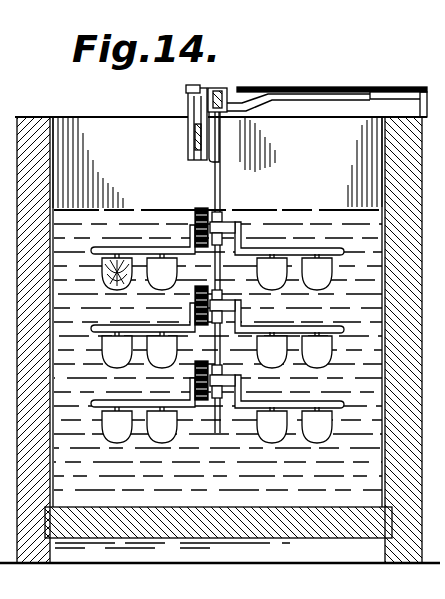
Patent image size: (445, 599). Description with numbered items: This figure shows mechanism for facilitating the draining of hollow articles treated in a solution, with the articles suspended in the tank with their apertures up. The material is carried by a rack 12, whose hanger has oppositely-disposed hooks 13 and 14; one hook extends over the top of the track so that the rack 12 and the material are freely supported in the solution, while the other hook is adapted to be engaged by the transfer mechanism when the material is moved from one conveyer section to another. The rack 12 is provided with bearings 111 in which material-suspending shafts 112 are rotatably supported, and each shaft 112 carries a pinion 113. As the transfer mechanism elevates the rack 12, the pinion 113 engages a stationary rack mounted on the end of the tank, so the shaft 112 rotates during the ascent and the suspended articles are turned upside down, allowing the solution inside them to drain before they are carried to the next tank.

The hook 14 is at (191, 88).
The hook 13 is at (214, 90).
The rack 12 is at (219, 210).
The pinion 113 is at (204, 208).
The bearing 111 is at (223, 230).
The material-suspending shaft 112 is at (272, 250).